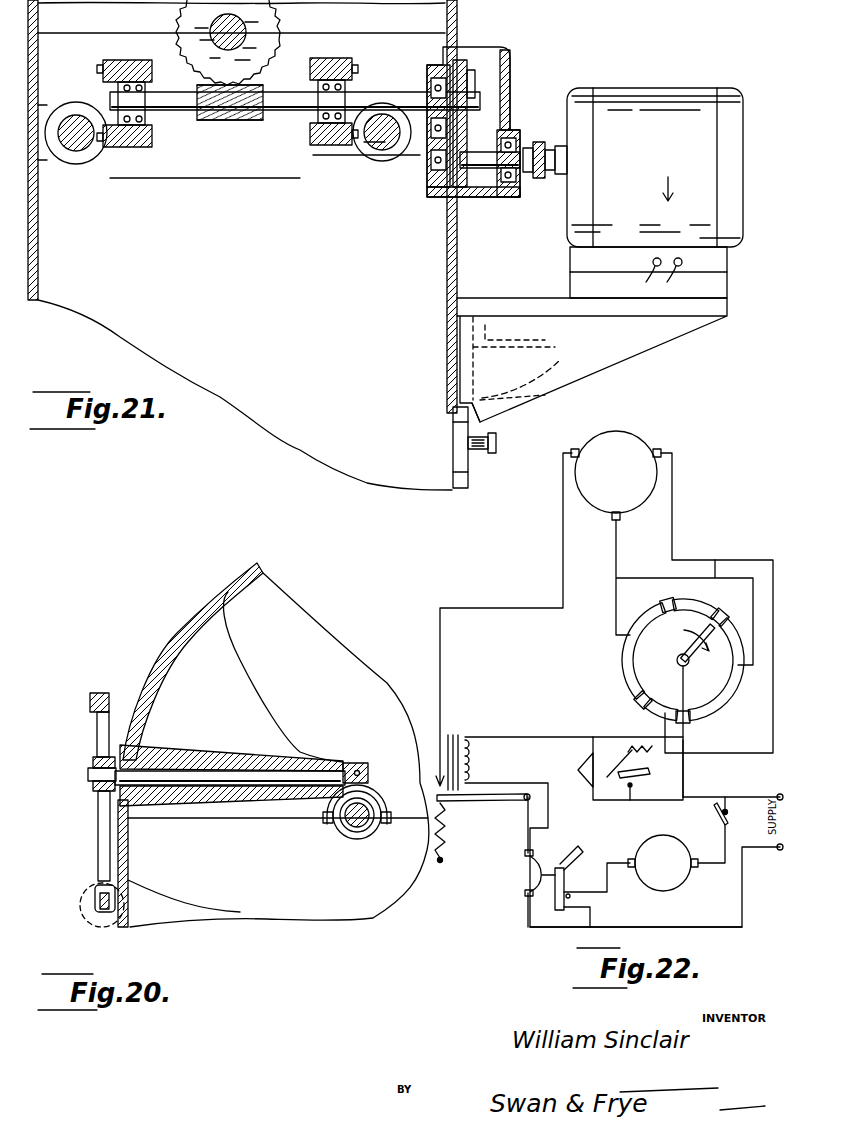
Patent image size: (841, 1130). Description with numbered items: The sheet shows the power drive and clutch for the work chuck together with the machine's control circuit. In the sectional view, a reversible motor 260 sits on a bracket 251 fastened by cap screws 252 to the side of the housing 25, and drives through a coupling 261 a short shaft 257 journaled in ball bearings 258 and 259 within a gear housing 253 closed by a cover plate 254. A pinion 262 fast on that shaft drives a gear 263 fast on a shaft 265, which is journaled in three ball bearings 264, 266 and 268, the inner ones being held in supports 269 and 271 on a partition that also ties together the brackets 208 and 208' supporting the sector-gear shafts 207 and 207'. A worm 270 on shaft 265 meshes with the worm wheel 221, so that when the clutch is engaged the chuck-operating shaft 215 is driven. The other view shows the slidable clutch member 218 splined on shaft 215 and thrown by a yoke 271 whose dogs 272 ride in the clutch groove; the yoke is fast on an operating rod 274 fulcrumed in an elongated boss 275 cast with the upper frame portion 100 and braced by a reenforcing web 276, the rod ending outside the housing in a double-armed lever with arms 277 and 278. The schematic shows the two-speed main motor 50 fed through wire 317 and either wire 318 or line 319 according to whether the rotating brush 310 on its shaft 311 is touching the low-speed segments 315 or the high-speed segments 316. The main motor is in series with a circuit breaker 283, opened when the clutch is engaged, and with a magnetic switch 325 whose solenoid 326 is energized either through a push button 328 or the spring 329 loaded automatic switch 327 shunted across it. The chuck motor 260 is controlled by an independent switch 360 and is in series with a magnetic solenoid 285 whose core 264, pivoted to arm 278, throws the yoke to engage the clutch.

In FIG. 21, the housing 25 is at (460, 375).
In FIG. 20, the housing 25 is at (215, 915).
In FIG. 22, the main motor 50 is at (628, 440).
In FIG. 20, the upper portion of the frame 100 is at (168, 622).
In FIG. 21, the shaft 207 is at (76, 153).
In FIG. 21, the shaft 207' is at (366, 150).
In FIG. 21, the bracket 208 is at (98, 159).
In FIG. 21, the bracket 208' is at (380, 185).
In FIG. 21, the chuck-operating shaft 215 is at (168, 28).
In FIG. 20, the chuck-operating shaft 215 is at (378, 808).
In FIG. 20, the clutch member 218 is at (367, 783).
In FIG. 21, the worm wheel 221 is at (285, 22).
In FIG. 21, the bracket 251 is at (538, 305).
In FIG. 21, the cap screws 252 is at (527, 358).
In FIG. 21, the gear housing 253 is at (490, 60).
In FIG. 21, the cover plate 254 is at (512, 50).
In FIG. 21, the short shaft 257 is at (484, 152).
In FIG. 21, the ball bearing 258 is at (520, 185).
In FIG. 21, the ball bearing 259 is at (480, 200).
In FIG. 21, the motor 260 is at (668, 100).
In FIG. 22, the motor 260 is at (680, 888).
In FIG. 21, the coupling 261 is at (540, 142).
In FIG. 21, the pinion 262 is at (380, 160).
In FIG. 21, the gear 263 is at (470, 75).
In FIG. 21, the ball bearing / solenoid core 264 is at (440, 60).
In FIG. 22, the ball bearing / solenoid core 264 is at (540, 910).
In FIG. 21, the shaft 265 is at (372, 92).
In FIG. 21, the ball bearing 266 is at (326, 140).
In FIG. 21, the ball bearing 268 is at (150, 125).
In FIG. 21, the support 269 is at (340, 58).
In FIG. 21, the worm 270 is at (228, 120).
In FIG. 21, the yoke / support 271 is at (142, 140).
In FIG. 20, the yoke / support 271 is at (372, 790).
In FIG. 20, the dogs 272 is at (375, 828).
In FIG. 20, the operating rod 274 is at (185, 768).
In FIG. 20, the elongated boss 275 is at (230, 795).
In FIG. 20, the reenforcing web 276 is at (240, 667).
In FIG. 20, the short arm 277 is at (96, 728).
In FIG. 20, the lever arm 278 is at (98, 830).
In FIG. 22, the circuit breaker 283 is at (524, 872).
In FIG. 22, the magnetic solenoid 285 is at (572, 880).
In FIG. 22, the rotatable brush 310 is at (688, 648).
In FIG. 22, the small shaft 311 is at (678, 666).
In FIG. 22, the segments 315 is at (625, 680).
In FIG. 22, the segments 316 is at (686, 600).
In FIG. 22, the wire 317 is at (558, 545).
In FIG. 22, the wire 318 is at (614, 548).
In FIG. 22, the line 319 is at (669, 545).
In FIG. 22, the magnetic switch 325 is at (486, 800).
In FIG. 22, the solenoid 326 is at (472, 748).
In FIG. 22, the automatic switch 327 is at (688, 768).
In FIG. 22, the push button 328 is at (578, 770).
In FIG. 22, the spring 329 is at (635, 766).
In FIG. 22, the switch 360 is at (718, 830).